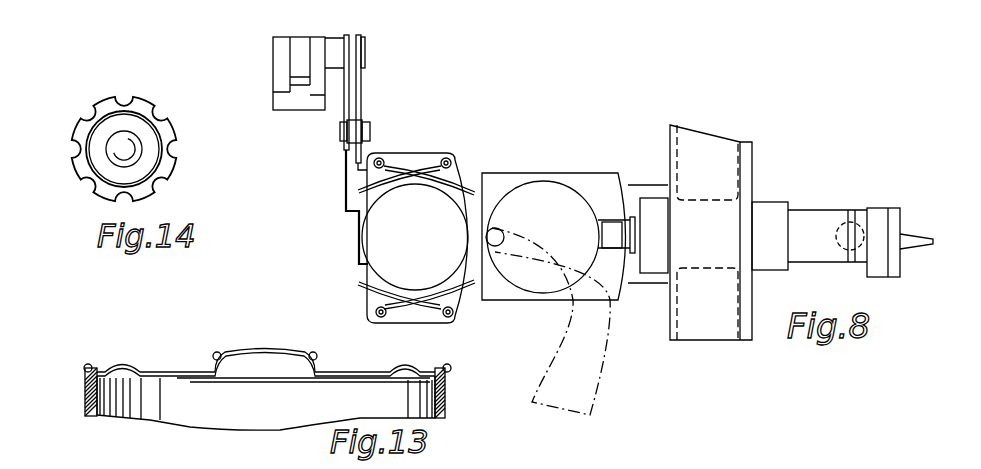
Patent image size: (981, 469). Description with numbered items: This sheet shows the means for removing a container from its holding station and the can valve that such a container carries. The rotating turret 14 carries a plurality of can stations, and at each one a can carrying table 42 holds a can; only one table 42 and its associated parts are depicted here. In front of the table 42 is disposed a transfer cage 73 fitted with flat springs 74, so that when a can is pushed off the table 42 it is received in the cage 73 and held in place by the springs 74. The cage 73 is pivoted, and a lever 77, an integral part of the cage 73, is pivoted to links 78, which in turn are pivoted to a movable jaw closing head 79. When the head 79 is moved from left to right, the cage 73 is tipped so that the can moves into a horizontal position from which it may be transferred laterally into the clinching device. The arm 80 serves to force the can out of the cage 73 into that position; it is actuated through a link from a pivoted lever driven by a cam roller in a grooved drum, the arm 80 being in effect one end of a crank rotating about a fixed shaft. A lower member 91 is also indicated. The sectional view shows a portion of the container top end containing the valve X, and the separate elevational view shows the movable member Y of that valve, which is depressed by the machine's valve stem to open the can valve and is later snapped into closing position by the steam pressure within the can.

In FIG. 8, the rotating turret 14 is at (745, 170).
In FIG. 8, the can carrying table 42 is at (590, 192).
In FIG. 8, the transfer cage 73 is at (453, 182).
In FIG. 8, the flat springs 74 is at (426, 172).
In FIG. 8, the lever 77 is at (348, 166).
In FIG. 8, the links 78 is at (358, 97).
In FIG. 13, the movable jaw closing head 79 is at (267, 409).
In FIG. 8, the arm 80 is at (583, 352).
In FIG. 8, the lower member 91 is at (572, 468).
In FIG. 13, the valve X is at (308, 357).
In FIG. 14, the movable member Y is at (98, 160).
In FIG. 13, the movable member Y is at (262, 350).